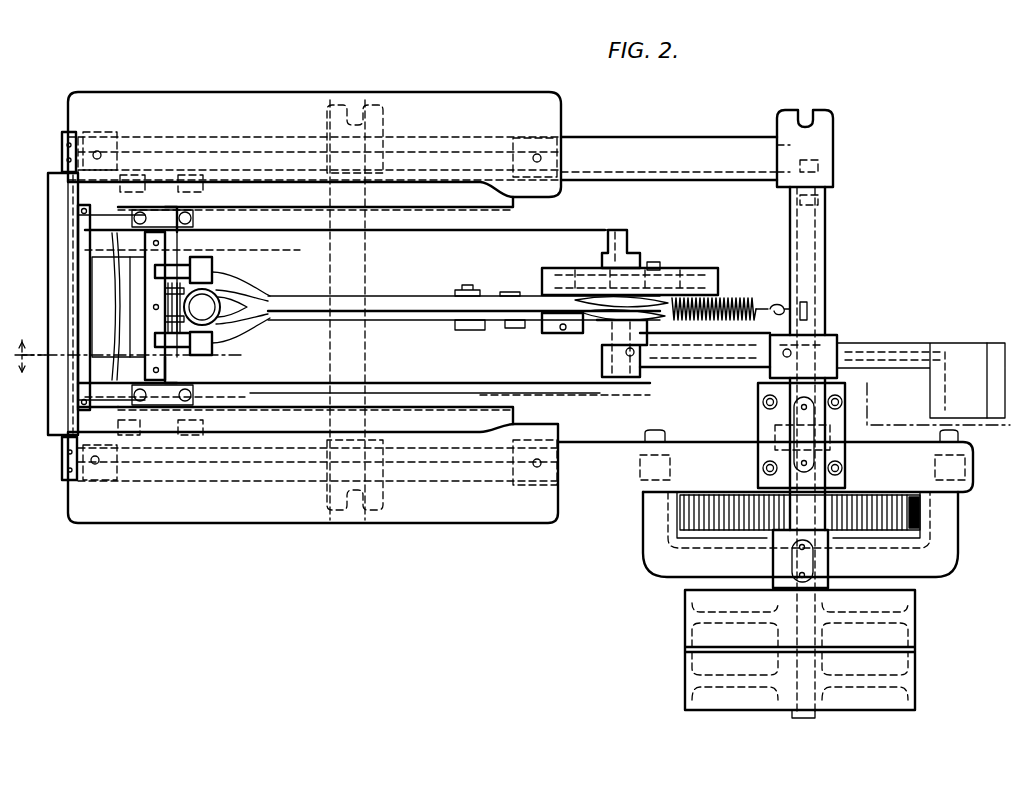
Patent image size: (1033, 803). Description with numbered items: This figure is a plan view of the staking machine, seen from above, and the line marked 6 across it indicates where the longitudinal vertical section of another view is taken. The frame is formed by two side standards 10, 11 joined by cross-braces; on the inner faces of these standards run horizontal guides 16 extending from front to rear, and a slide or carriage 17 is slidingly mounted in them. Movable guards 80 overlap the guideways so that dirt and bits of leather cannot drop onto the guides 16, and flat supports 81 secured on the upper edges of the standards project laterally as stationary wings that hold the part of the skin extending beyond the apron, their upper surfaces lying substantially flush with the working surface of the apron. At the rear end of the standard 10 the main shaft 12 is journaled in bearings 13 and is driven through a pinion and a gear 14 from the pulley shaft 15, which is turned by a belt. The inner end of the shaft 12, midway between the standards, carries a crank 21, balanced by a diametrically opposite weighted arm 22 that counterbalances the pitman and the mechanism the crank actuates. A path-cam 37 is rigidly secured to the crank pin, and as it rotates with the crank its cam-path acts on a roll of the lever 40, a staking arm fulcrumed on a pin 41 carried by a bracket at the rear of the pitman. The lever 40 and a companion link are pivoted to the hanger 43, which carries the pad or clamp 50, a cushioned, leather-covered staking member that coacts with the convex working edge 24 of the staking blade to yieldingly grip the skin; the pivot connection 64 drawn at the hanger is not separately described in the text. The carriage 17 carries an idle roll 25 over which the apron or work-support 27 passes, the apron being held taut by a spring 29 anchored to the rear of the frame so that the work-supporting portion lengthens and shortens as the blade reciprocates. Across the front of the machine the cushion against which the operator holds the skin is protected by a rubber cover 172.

The flat supports 81 is at (444, 97).
The movable guards 80 is at (425, 207).
The side standard 11 is at (666, 137).
The side standard 10 is at (586, 487).
The main shaft 12 is at (800, 592).
The bearings 13 is at (840, 432).
The gear 14 is at (918, 514).
The pulley shaft 15 is at (800, 687).
The guides 16 is at (563, 201).
The slide or carriage 17 is at (160, 395).
The crank 21 is at (700, 368).
The weighted arm 22 is at (888, 343).
The convex working edge of the staking blade 24 is at (112, 283).
The idle roll 25 is at (82, 222).
The apron or work-support 27 is at (588, 233).
The spring 29 is at (741, 299).
The path-cam 37 is at (712, 268).
The lever 40 is at (394, 306).
The pin (fulcrum) 41 is at (570, 335).
The hanger 43 is at (214, 270).
The pad or clamp 50 is at (145, 297).
The pivot eye 64 is at (207, 312).
The rubber cover 172 is at (60, 213).
The section line 6- 6 is at (514, 390).